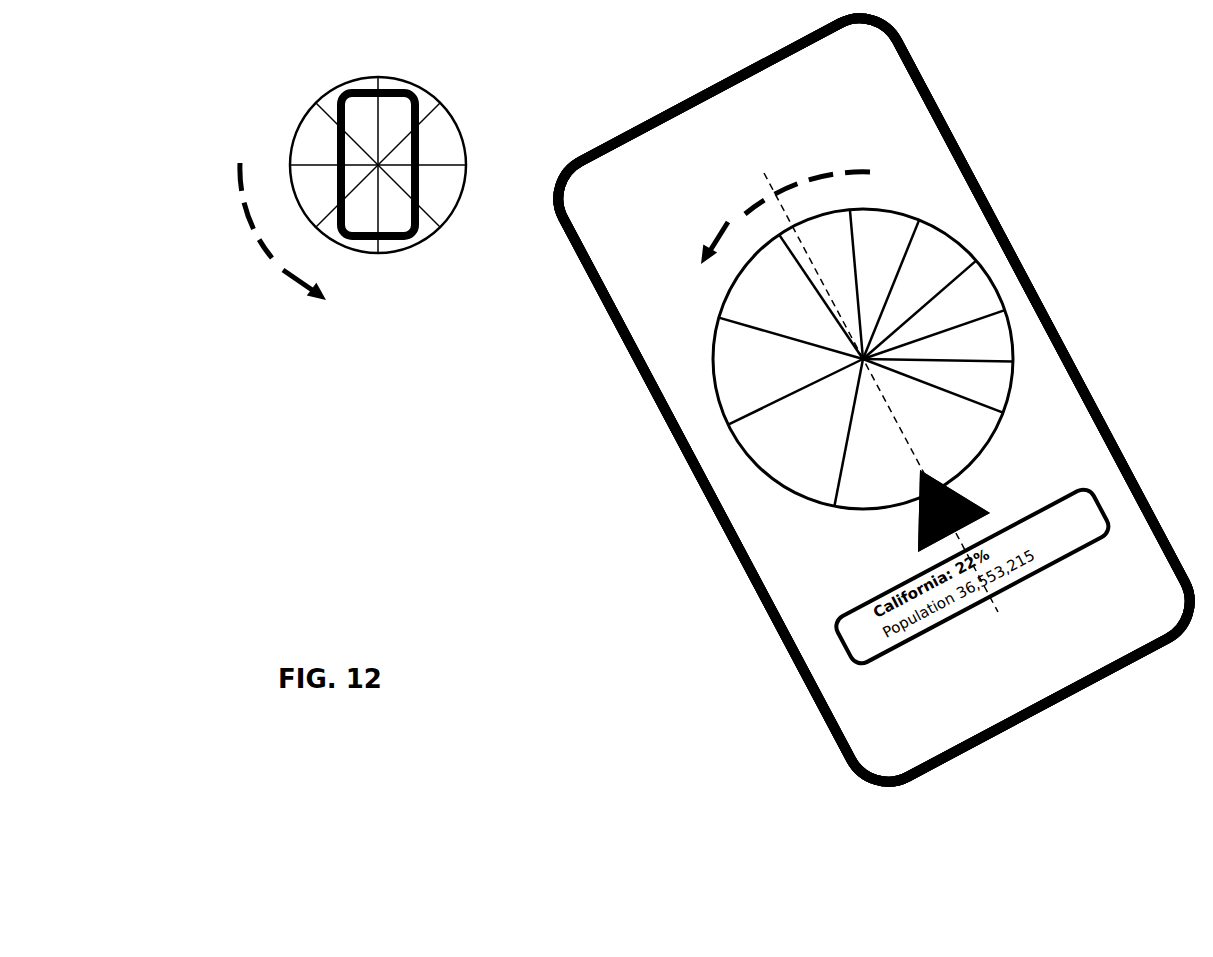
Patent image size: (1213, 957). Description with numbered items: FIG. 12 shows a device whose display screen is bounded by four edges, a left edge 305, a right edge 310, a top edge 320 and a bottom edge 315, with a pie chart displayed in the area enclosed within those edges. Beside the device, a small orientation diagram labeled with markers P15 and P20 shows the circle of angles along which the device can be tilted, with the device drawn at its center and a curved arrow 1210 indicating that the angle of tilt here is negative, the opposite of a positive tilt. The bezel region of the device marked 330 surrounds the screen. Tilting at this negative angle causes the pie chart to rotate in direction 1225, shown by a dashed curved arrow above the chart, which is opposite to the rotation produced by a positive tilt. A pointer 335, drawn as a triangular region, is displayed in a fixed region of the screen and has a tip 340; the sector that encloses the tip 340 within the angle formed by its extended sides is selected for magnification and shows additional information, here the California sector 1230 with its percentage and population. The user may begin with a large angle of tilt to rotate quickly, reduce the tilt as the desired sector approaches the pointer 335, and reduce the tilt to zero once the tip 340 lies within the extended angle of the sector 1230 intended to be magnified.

The left edge 305 is at (688, 462).
The right edge 310 is at (1028, 278).
The bottom edge 315 is at (1068, 712).
The top edge 320 is at (764, 172).
The device bezel 330 is at (692, 99).
The pointer 335 is at (962, 492).
The tip 340 is at (920, 470).
The arrow 1210 is at (262, 250).
The direction of rotation 1225 is at (745, 198).
The sector 1230 is at (958, 433).
The device orientation P15 is at (418, 148).
The orientation diagram P20 is at (410, 253).